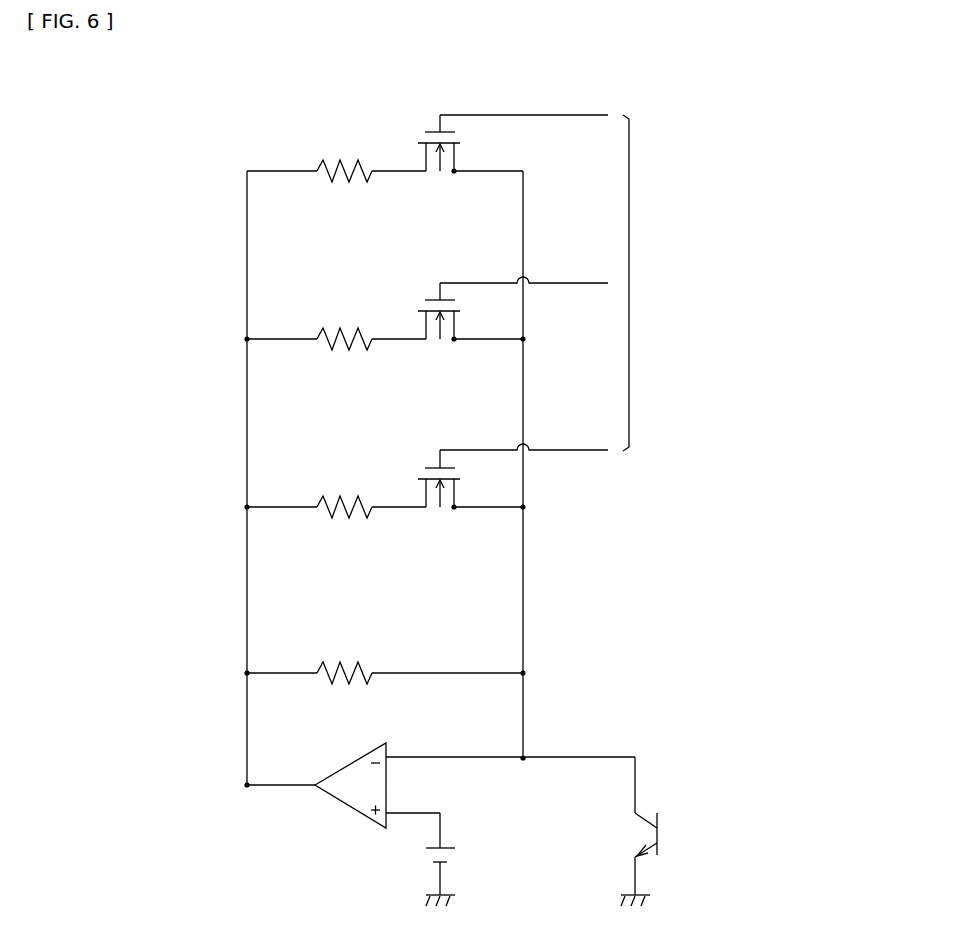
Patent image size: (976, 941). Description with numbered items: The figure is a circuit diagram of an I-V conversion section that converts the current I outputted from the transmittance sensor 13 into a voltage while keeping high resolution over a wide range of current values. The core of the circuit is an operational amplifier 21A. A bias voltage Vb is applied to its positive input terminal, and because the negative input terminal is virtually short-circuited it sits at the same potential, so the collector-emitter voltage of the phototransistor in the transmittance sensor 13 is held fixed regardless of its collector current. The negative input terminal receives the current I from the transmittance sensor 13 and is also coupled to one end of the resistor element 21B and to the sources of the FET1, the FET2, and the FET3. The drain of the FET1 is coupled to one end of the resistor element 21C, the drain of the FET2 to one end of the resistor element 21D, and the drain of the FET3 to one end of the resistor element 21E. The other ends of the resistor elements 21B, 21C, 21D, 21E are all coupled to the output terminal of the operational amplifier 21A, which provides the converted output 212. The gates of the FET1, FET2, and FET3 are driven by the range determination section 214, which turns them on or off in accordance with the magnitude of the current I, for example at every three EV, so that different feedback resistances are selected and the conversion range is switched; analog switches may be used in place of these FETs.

The operational amplifier 21A is at (352, 806).
The resistor element 21B is at (334, 669).
The resistor element 21C is at (334, 501).
The resistor element 21D is at (334, 333).
The resistor element 21E is at (334, 165).
The output signal 212 is at (247, 785).
The range determination section 214 is at (638, 283).
The transmittance sensor 13 is at (674, 834).
The FET FET1 is at (447, 520).
The FET FET2 is at (447, 352).
The FET FET3 is at (447, 184).
The bias voltage Vb is at (452, 850).
The current I is at (604, 747).